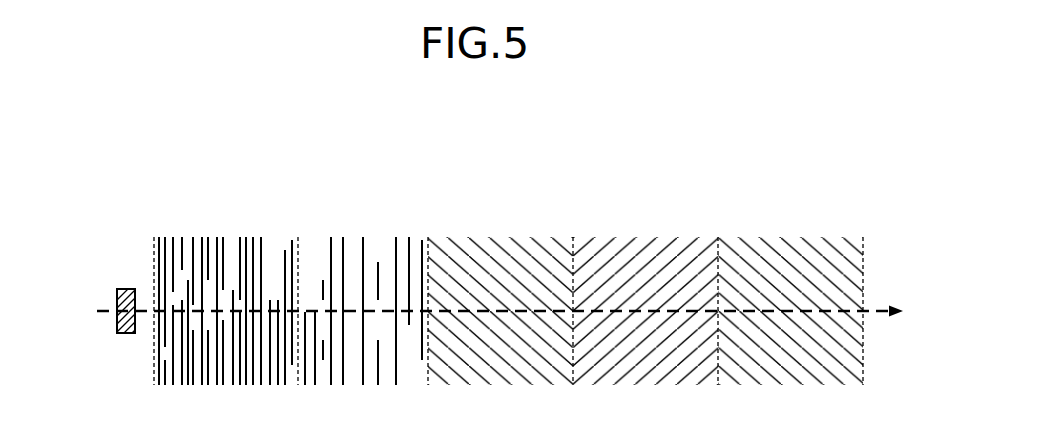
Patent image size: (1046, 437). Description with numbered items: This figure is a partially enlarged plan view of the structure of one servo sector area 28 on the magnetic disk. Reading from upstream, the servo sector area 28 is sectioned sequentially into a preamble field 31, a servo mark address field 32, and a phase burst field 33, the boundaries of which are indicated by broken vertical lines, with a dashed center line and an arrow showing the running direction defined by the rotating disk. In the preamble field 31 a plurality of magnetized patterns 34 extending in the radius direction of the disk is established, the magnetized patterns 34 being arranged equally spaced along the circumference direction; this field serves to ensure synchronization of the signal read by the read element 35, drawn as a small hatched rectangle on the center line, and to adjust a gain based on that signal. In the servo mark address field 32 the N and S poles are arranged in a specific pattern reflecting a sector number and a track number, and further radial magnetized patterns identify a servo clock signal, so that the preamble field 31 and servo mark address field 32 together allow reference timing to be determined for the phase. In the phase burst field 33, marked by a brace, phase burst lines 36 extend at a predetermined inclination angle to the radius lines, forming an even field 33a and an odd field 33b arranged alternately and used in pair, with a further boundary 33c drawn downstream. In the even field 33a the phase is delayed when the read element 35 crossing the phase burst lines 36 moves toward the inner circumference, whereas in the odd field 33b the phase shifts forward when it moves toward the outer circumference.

The servo sector area 28 is at (820, 174).
The preamble field 31 is at (147, 233).
The servo mark address field 32 is at (288, 233).
The phase burst field 33 is at (728, 178).
The even field 33a is at (420, 233).
The odd field 33b is at (565, 233).
The second region third position 33c is at (708, 233).
The magnetized patterns 34 is at (193, 237).
The read element 35 is at (117, 322).
The phase burst lines 36 is at (748, 238).